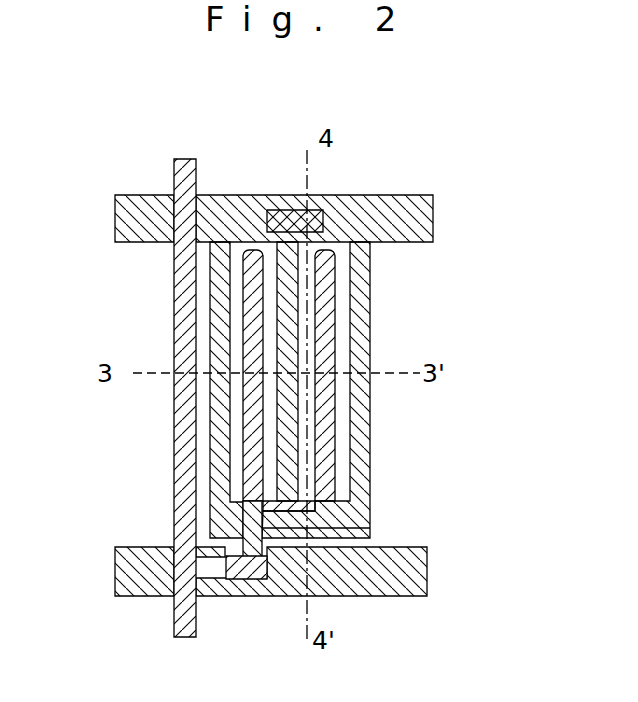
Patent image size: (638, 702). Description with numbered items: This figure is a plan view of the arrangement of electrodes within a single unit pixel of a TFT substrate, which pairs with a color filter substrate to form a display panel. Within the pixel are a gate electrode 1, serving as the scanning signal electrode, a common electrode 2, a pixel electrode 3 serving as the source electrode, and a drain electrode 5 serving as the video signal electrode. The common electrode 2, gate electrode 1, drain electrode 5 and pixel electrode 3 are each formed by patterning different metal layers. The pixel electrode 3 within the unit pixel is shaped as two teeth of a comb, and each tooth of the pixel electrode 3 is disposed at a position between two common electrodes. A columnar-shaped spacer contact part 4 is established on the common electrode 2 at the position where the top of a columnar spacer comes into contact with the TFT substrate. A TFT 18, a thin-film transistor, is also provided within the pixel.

The gate electrode 1 is at (412, 573).
The common electrode 2 is at (355, 478).
The pixel electrode 3 is at (336, 302).
The columnar-shaped spacer contact part 4 is at (283, 210).
The drain electrode 5 is at (185, 465).
The TFT 18 is at (236, 583).